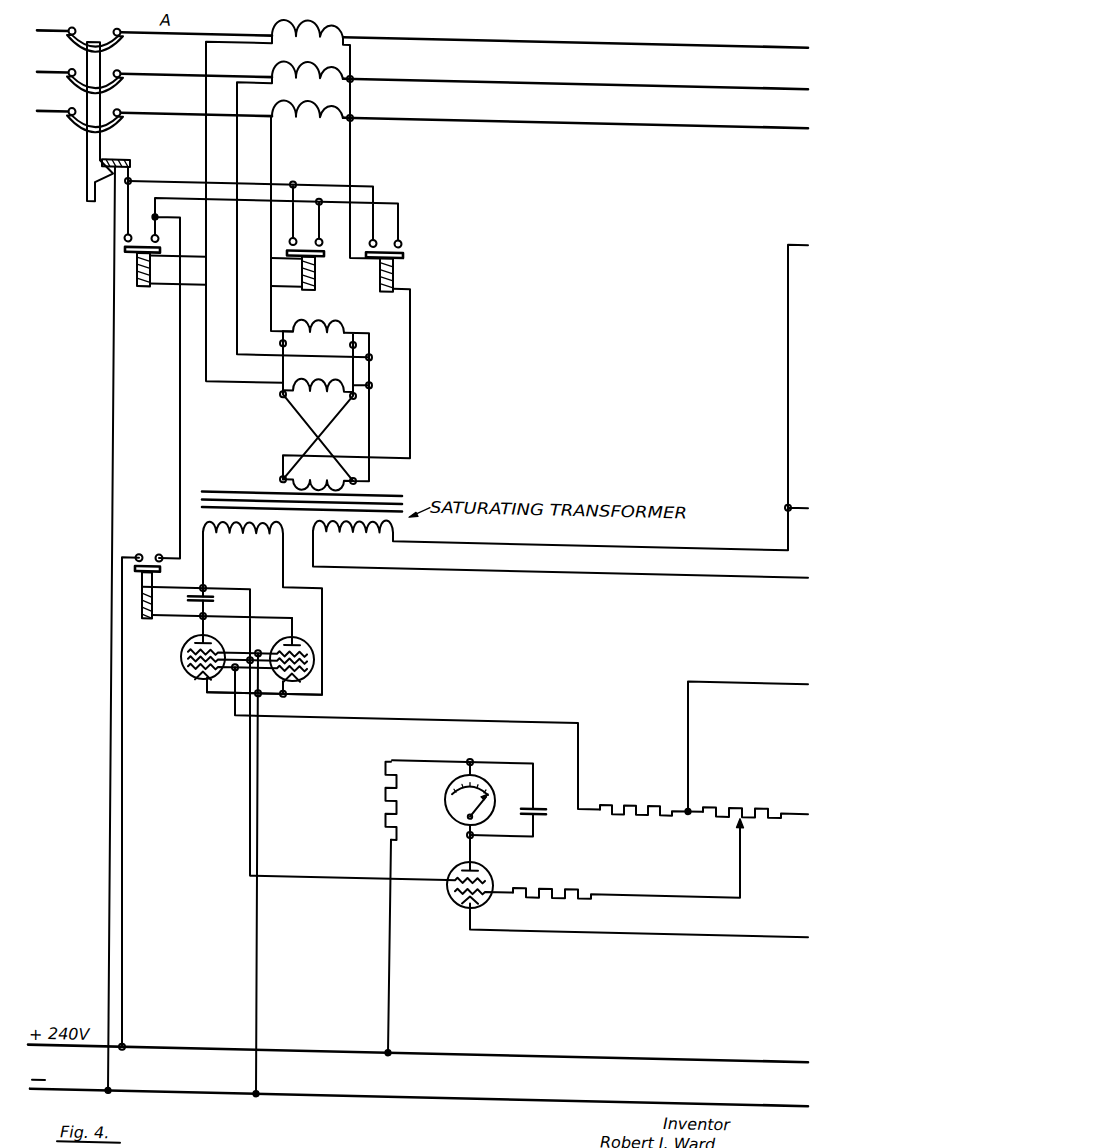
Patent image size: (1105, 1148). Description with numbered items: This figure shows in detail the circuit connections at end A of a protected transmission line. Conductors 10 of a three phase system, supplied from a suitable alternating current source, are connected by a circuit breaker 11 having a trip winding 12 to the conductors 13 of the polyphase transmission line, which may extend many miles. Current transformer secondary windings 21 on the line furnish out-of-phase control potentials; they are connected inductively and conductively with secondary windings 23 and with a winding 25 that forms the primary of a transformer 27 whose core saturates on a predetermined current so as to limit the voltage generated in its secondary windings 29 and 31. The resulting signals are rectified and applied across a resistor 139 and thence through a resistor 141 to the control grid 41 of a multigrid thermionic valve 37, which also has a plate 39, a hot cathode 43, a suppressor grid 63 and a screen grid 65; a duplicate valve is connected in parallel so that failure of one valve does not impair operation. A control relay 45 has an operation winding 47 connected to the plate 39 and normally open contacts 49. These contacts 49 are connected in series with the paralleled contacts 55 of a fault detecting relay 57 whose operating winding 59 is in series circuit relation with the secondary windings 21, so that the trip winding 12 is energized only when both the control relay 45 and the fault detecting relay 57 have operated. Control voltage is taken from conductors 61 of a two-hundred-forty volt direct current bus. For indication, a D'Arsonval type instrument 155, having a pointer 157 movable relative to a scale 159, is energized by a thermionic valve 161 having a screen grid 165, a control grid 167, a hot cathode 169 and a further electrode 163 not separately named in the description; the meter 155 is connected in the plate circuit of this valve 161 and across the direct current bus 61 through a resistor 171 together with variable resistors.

The conductors of a three phase system 10 is at (63, 28).
The circuit breaker 11 is at (97, 36).
The trip winding 12 is at (131, 150).
The conductors 13 is at (774, 30).
The secondary winding 21 is at (306, 35).
The secondary winding 23 is at (307, 335).
The primary winding 25 is at (325, 466).
The transformer 27 is at (256, 473).
The secondary winding 29 is at (238, 527).
The secondary winding 31 is at (372, 527).
The thermionic valve 37 is at (194, 681).
The plate 39 is at (206, 635).
The control grid 41 is at (188, 662).
The hot cathode 43 is at (192, 670).
The control relay 45 is at (150, 527).
The operation winding 47 is at (143, 608).
The normally open contacts 49 is at (150, 551).
The paralleled contacts 55 is at (145, 237).
The fault detecting relay 57 is at (130, 266).
The operating winding 59 is at (137, 283).
The conductors of a direct current bus 61 is at (203, 1043).
The suppressor grid 63 is at (188, 647).
The screen grid 65 is at (188, 654).
The resistor 139 is at (749, 789).
The resistor 141 is at (640, 792).
The indicating instrument 155 is at (455, 789).
The pointer 157 is at (488, 801).
The scale 159 is at (487, 781).
The thermionic valve 161 is at (451, 853).
The anode 163 is at (477, 859).
The screen grid 165 is at (487, 869).
The control grid 167 is at (449, 882).
The hot cathode 169 is at (457, 892).
The resistor 171 is at (385, 798).